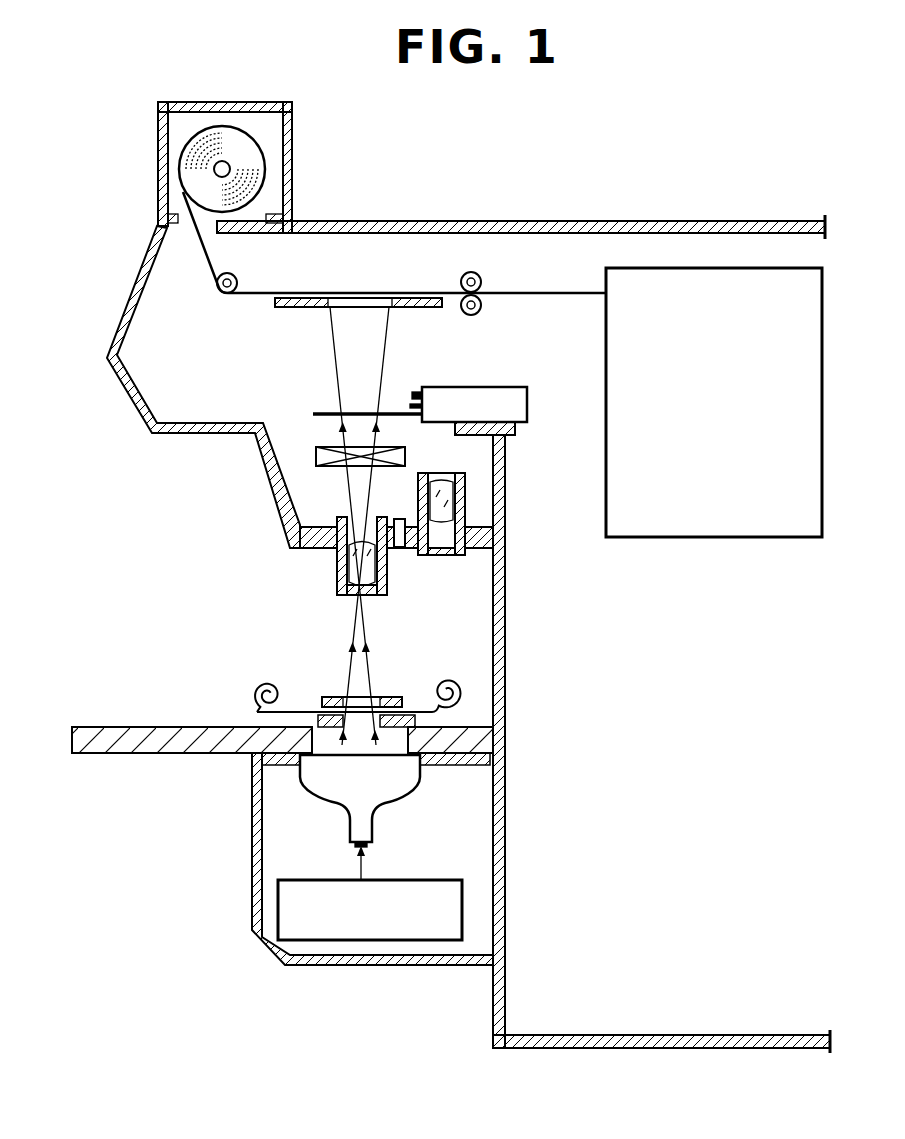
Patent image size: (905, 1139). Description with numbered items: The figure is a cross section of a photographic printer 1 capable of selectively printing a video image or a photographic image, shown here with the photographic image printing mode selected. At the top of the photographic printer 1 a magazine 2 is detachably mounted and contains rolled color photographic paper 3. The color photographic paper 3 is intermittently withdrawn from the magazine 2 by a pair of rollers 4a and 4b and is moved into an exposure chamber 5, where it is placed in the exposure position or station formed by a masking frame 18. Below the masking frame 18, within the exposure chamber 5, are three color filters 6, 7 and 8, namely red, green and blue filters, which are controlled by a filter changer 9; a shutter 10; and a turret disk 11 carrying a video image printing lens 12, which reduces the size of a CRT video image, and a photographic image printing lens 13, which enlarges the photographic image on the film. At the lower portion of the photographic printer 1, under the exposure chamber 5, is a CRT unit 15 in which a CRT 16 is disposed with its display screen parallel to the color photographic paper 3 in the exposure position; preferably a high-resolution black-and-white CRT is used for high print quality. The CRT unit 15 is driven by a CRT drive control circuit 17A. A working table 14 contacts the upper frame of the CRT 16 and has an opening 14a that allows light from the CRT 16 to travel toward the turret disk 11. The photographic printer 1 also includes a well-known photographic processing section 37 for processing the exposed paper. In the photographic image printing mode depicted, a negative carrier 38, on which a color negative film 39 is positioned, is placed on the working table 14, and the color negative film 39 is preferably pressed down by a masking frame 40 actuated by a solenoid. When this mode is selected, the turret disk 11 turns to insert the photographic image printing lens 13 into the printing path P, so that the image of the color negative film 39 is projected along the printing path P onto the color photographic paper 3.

The photographic printer 1 is at (403, 220).
The magazine 2 is at (160, 165).
The color photographic paper 3 is at (246, 303).
The roller 4a is at (240, 283).
The roller 4b is at (482, 282).
The exposure chamber 5 is at (150, 297).
The red color filter 6 is at (327, 411).
The green color filter 7 is at (412, 405).
The blue color filter 8 is at (416, 392).
The filter changer 9 is at (500, 387).
The shutter 10 is at (316, 456).
The turret disk 11 is at (330, 548).
The video image printing lens 12 is at (441, 555).
The photographic image printing lens 13 is at (350, 594).
The working table 14 is at (140, 726).
The opening 14a is at (397, 760).
The CRT unit 15 is at (250, 843).
The CRT 16 is at (335, 800).
The CRT drive control circuit 17A is at (414, 879).
The masking frame 18 is at (283, 309).
The photographic processing section 37 is at (720, 538).
The negative carrier 38 is at (418, 706).
The color negative film 39 is at (265, 683).
The masking frame 40 is at (332, 697).
The printing path P is at (367, 628).